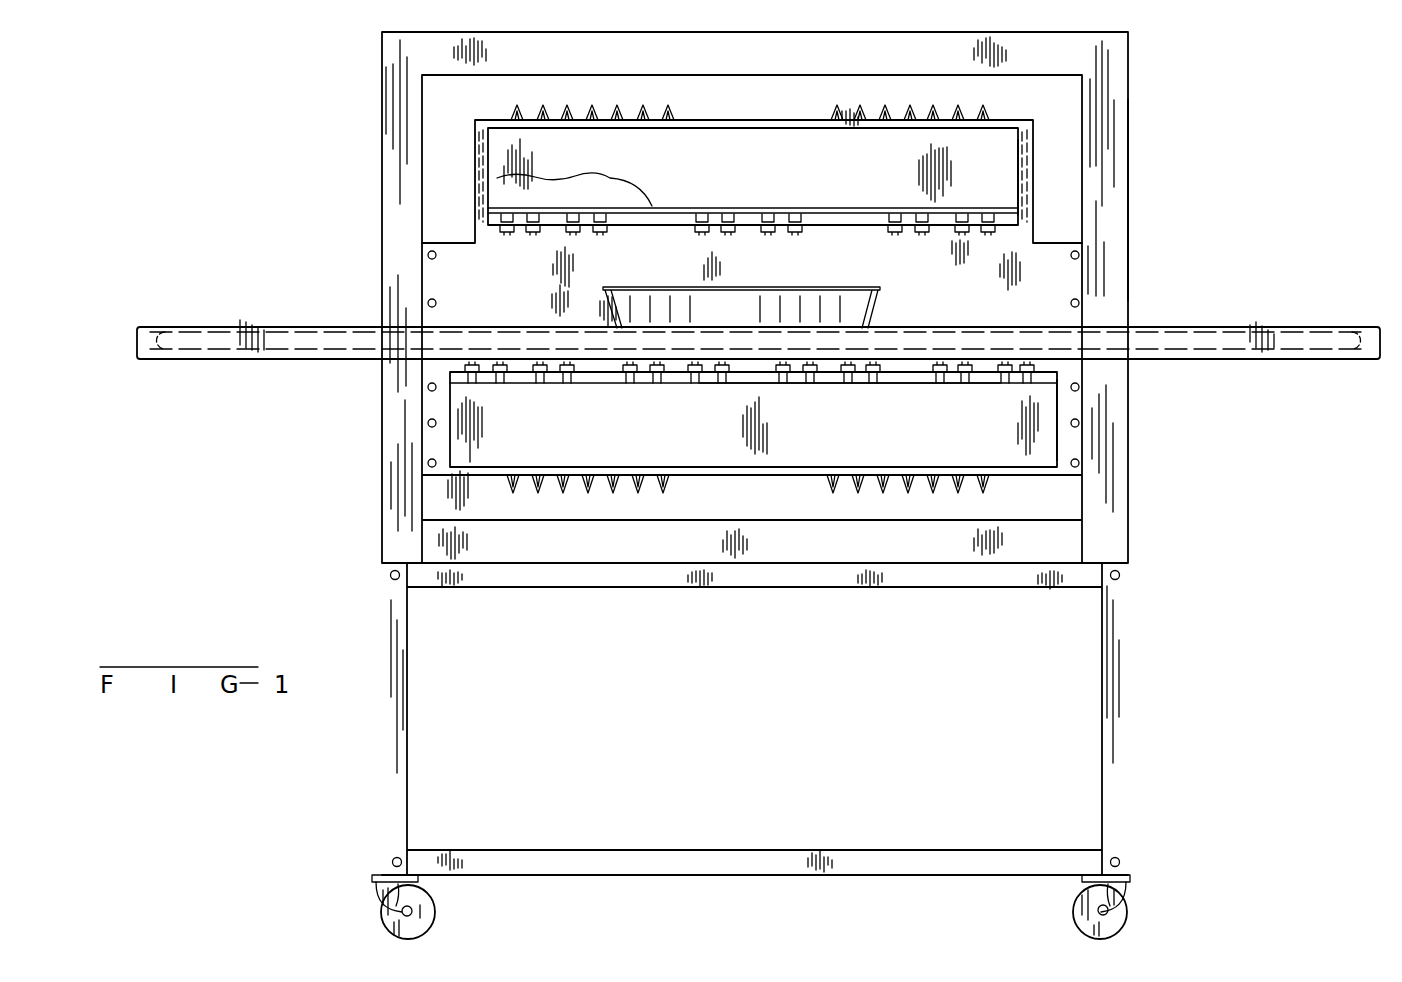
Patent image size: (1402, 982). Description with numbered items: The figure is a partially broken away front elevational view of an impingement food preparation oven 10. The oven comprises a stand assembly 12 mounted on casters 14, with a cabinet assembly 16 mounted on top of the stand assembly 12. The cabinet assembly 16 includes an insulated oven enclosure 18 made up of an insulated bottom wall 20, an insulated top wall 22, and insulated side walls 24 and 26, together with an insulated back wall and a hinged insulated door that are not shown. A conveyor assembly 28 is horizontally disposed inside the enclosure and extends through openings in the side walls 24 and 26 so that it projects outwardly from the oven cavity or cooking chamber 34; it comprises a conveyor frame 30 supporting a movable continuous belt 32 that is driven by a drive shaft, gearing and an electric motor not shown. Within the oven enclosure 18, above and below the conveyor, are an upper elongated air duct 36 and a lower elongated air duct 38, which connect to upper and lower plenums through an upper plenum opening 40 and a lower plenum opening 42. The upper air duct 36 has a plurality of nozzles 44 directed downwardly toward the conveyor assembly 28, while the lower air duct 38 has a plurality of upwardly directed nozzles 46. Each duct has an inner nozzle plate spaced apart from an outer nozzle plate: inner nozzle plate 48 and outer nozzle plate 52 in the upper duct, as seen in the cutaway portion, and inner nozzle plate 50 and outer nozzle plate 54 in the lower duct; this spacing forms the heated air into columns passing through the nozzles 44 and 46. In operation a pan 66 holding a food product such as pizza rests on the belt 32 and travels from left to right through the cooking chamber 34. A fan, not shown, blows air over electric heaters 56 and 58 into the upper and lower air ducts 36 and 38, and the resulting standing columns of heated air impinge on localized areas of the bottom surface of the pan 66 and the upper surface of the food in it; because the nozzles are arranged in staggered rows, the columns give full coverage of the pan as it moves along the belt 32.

The impingement food preparation oven 10 is at (1148, 212).
The stand assembly 12 is at (1134, 684).
The casters 14 is at (378, 890).
The cabinet assembly 16 is at (355, 257).
The insulated oven enclosure 18 is at (1128, 278).
The insulated bottom wall 20 is at (1060, 540).
The insulated top wall 22 is at (1048, 55).
The insulated side wall 24 is at (390, 80).
The insulated side wall 26 is at (1110, 118).
The conveyor assembly 28 is at (226, 324).
The conveyor frame 30 is at (168, 360).
The continuous belt 32 is at (292, 358).
The cooking chamber 34 is at (527, 299).
The upper elongated air duct 36 is at (508, 150).
The lower elongated air duct 38 is at (495, 455).
The upper plenum opening 40 is at (1018, 178).
The lower plenum opening 42 is at (1058, 432).
The nozzles 44 is at (974, 258).
The nozzles 46 is at (996, 405).
The inner nozzle plate 48 is at (595, 207).
The inner nozzle plate 50 is at (590, 383).
The outer nozzle plate 52 is at (647, 226).
The outer nozzle plate 54 is at (910, 383).
The electric heater 56 is at (858, 108).
The electric heater 58 is at (858, 493).
The pan 66 is at (878, 312).